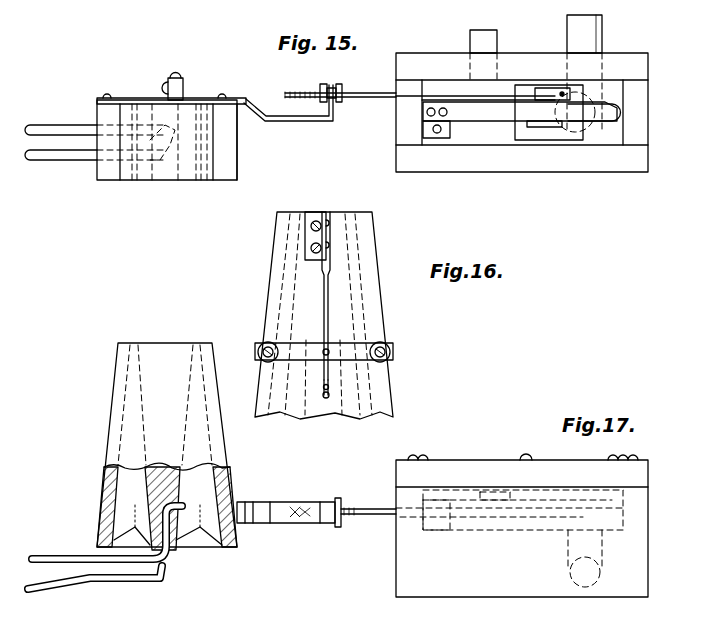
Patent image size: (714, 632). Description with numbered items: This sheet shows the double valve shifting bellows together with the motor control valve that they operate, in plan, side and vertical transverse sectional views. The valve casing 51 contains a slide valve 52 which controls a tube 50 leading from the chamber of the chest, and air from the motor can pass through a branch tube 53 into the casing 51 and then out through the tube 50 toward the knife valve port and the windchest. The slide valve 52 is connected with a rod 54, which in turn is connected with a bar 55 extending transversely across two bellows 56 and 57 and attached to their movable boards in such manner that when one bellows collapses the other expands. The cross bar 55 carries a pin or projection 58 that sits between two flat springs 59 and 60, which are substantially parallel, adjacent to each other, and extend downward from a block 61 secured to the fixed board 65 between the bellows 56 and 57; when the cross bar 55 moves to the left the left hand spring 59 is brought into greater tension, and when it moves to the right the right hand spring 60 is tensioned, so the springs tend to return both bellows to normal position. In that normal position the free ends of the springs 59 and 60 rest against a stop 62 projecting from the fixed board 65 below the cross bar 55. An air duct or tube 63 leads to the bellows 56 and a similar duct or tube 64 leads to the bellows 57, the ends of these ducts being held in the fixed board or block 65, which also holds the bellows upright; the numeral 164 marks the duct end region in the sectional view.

In FIG. 15, the tube 50 is at (590, 42).
In FIG. 15, the valve casing 51 is at (640, 106).
In FIG. 17, the valve casing 51 is at (478, 487).
In FIG. 15, the slide valve 52 is at (514, 130).
In FIG. 15, the branch tube 53 is at (490, 40).
In FIG. 15, the rod 54 is at (361, 93).
In FIG. 17, the rod 54 is at (374, 508).
In FIG. 15, the bar 55 is at (212, 99).
In FIG. 16, the bar 55 is at (365, 346).
In FIG. 17, the bar 55 is at (298, 502).
In FIG. 15, the bellows 56 is at (109, 175).
In FIG. 16, the bellows 56 is at (290, 276).
In FIG. 17, the bellows 56 is at (105, 510).
In FIG. 15, the bellows 57 is at (207, 176).
In FIG. 16, the bellows 57 is at (358, 272).
In FIG. 17, the bellows 57 is at (237, 546).
In FIG. 16, the pin or projection 58 is at (323, 356).
In FIG. 16, the flat spring 59 is at (322, 298).
In FIG. 16, the flat spring 60 is at (330, 302).
In FIG. 15, the block 61 is at (185, 92).
In FIG. 16, the block 61 is at (312, 216).
In FIG. 16, the stop 62 is at (330, 390).
In FIG. 17, the air duct or tube 63 is at (148, 488).
In FIG. 15, the air duct or tube 64 is at (46, 157).
In FIG. 17, the air duct or tube 64 is at (78, 582).
In FIG. 15, the fixed board 65 is at (46, 127).
In FIG. 16, the fixed board 65 is at (325, 414).
In FIG. 17, the fixed board 65 is at (174, 552).
In FIG. 17, the wire end 164 is at (183, 506).